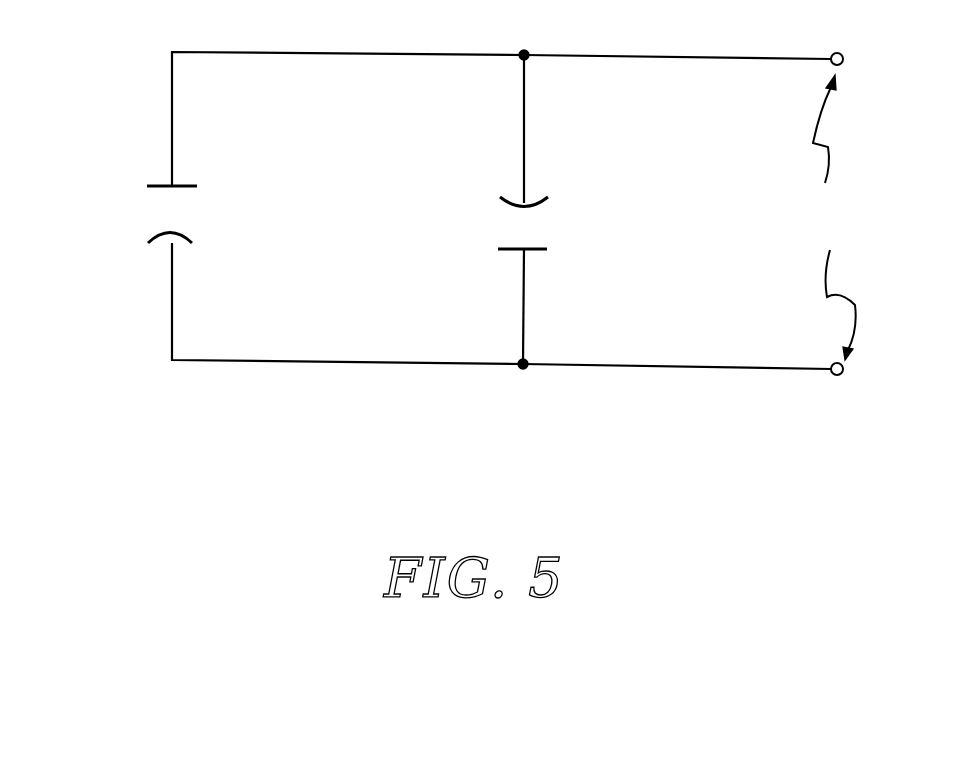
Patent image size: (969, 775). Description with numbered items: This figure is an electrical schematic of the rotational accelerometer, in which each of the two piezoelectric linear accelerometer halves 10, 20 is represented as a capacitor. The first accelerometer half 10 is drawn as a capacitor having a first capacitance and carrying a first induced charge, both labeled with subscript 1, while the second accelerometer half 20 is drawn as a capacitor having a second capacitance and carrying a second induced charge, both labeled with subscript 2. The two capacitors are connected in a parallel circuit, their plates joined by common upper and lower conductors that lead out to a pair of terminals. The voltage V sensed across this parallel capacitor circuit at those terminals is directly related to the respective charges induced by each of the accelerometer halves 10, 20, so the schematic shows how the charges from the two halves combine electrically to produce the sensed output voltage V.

The accelerometer half 10 is at (96, 123).
The accelerometer half 20 is at (596, 189).
The first capacitor C1 with charge q1 1 is at (184, 215).
The second capacitor C2 with charge q2 2 is at (527, 209).
The voltage V is at (834, 217).